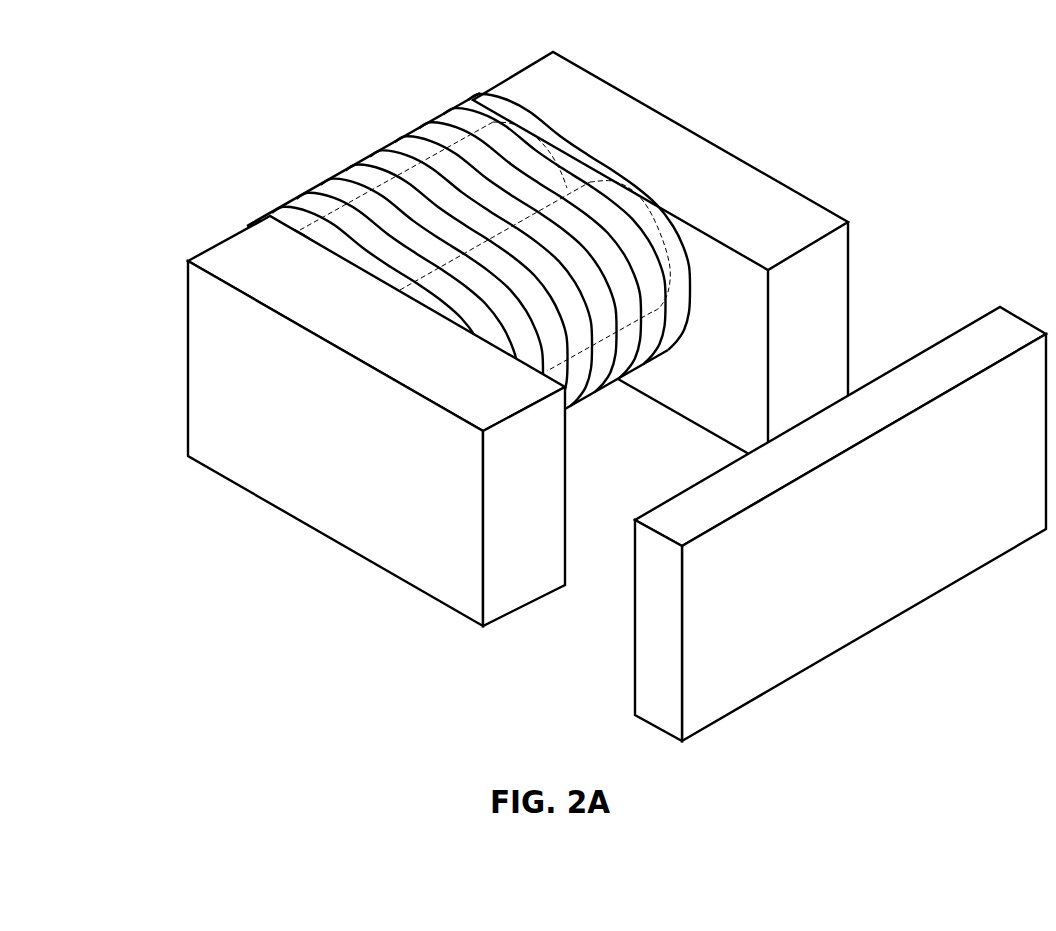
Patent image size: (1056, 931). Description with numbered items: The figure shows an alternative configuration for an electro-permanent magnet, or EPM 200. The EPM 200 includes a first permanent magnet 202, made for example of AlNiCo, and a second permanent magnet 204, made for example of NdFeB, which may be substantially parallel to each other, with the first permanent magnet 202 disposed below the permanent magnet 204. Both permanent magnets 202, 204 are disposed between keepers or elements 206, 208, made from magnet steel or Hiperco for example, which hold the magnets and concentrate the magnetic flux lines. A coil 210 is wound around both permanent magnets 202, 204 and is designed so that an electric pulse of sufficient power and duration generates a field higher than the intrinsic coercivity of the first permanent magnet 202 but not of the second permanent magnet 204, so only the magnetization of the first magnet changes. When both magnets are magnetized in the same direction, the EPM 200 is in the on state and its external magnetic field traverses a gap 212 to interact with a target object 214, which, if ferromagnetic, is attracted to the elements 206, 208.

The EPM 200 is at (287, 99).
The first permanent magnet 202 is at (624, 209).
The permanent magnet 204 is at (468, 242).
The element 206 is at (823, 268).
The element 208 is at (198, 332).
The coil 210 is at (427, 104).
The gap 212 is at (559, 642).
The target object 214 is at (940, 582).